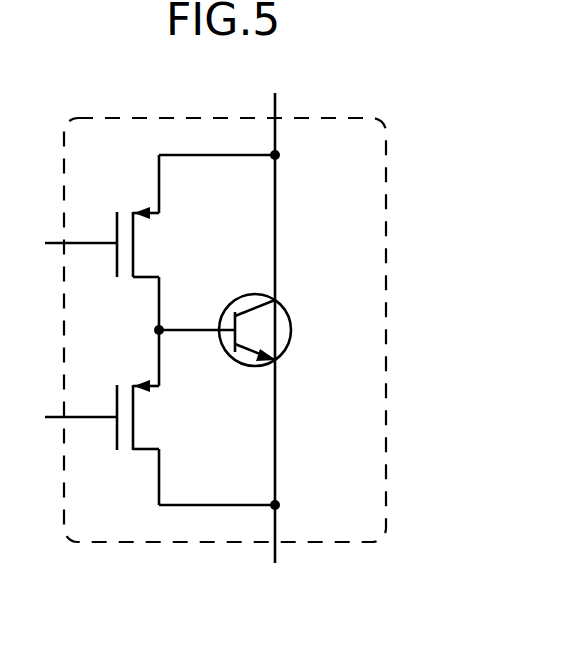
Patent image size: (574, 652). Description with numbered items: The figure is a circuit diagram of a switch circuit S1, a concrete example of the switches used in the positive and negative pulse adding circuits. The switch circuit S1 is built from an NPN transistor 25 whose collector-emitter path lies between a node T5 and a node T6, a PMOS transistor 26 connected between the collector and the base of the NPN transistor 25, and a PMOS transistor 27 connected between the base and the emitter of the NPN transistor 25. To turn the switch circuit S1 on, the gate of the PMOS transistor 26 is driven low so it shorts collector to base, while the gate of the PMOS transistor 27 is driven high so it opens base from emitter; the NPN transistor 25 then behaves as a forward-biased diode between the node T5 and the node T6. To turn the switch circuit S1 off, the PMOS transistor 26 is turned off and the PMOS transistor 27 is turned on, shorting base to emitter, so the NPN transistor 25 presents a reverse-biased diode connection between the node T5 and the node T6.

The NPN transistor 25 is at (285, 310).
The PMOS transistor 26 is at (160, 246).
The PMOS transistor 27 is at (160, 421).
The switch circuit S1 is at (387, 241).
The node T5 is at (277, 110).
The node T6 is at (278, 552).